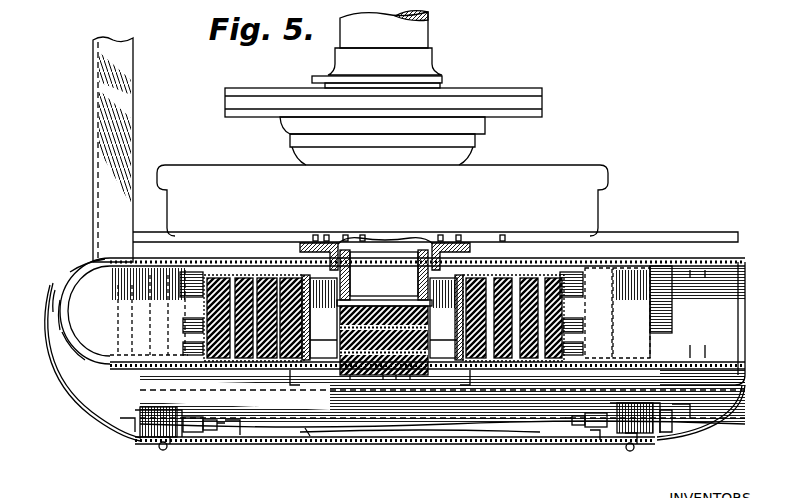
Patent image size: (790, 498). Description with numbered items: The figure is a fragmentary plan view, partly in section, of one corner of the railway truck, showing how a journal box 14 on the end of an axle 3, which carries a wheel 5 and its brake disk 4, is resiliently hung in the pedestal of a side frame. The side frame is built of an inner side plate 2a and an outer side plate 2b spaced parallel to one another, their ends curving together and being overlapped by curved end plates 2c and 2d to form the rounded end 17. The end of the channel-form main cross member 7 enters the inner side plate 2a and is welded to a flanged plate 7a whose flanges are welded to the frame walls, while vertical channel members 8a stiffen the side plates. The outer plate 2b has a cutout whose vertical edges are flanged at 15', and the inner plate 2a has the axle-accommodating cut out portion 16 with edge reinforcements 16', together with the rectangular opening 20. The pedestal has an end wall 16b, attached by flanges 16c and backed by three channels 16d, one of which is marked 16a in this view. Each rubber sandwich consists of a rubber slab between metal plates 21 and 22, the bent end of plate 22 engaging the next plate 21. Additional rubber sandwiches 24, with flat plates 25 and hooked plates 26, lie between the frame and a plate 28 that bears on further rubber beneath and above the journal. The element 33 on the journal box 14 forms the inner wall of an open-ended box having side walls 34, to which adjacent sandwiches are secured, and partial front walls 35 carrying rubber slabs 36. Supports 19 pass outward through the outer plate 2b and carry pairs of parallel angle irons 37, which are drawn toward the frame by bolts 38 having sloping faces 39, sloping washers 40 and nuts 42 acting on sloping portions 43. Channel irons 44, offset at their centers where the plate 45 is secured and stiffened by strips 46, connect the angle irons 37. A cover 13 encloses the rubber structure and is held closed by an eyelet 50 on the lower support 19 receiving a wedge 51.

The axle 3 is at (418, 34).
The brake disk 4 is at (535, 96).
The wheel 5 is at (606, 176).
The main cross member 7 is at (126, 105).
The flanged plate 7a is at (72, 322).
The inner side plate 2a is at (122, 256).
The outer side plate 2b is at (80, 388).
The curved end plate 2c is at (56, 305).
The curved end plate 2d is at (100, 282).
The vertical channel member 8a is at (700, 262).
The cover 13 is at (672, 420).
The journal box 14 is at (446, 250).
The flanged vertical edge 15' is at (393, 463).
The cut out portion 16 is at (435, 224).
The edge reinforcement 16' is at (327, 220).
The bracket 16a is at (173, 252).
The pedestal end wall 16b is at (218, 252).
The flange 16c is at (207, 250).
The channel 16d is at (605, 252).
The rounded end 17 is at (85, 335).
The support 19 is at (150, 322).
The rectangular opening 20 is at (717, 290).
The metal plate 21 is at (258, 277).
The metal plate 22 is at (243, 277).
The rubber sandwich 24 is at (410, 378).
The flat metal plate 25 is at (398, 378).
The metal plate 26 is at (385, 378).
The plate 28 is at (395, 302).
The plate 33 is at (304, 255).
The side wall 34 is at (383, 318).
The partial front wall 35 is at (383, 350).
The rubber slab 36 is at (315, 380).
The angle iron 37 is at (118, 418).
The bolt 38 is at (217, 432).
The sloping face 39 is at (140, 432).
The washer 40 is at (198, 432).
The nut 42 is at (212, 432).
The sloping portion 43 is at (125, 425).
The channel iron 44 is at (265, 400).
The plate 45 is at (352, 378).
The metallic strip 46 is at (308, 430).
The eyelet 50 is at (175, 440).
The wedge 51 is at (160, 448).